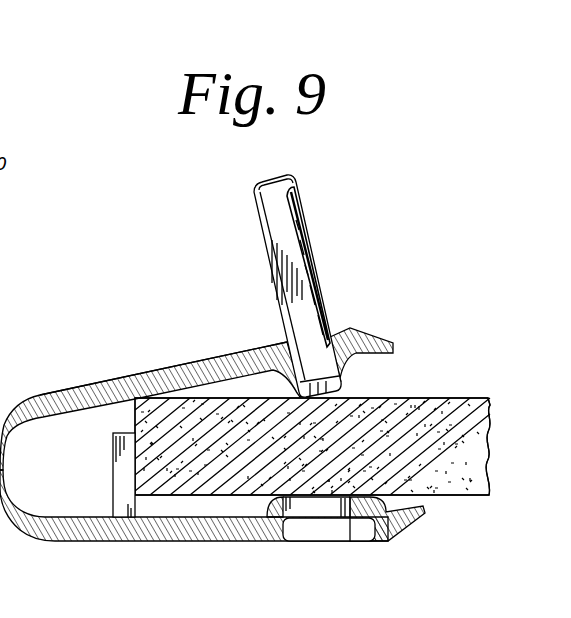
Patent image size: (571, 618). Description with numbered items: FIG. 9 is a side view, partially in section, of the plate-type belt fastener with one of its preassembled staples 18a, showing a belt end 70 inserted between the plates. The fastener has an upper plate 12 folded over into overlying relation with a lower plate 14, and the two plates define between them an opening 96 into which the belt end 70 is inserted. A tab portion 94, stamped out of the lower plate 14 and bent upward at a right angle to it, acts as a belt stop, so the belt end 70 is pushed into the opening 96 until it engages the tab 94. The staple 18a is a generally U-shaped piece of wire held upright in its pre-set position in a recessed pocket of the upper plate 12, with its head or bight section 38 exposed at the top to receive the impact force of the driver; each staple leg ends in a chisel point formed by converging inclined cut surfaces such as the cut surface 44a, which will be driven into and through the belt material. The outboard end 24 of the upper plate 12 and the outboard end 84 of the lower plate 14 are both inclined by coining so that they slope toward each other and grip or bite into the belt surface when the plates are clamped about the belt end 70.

The upper plate 12 is at (40, 400).
The lower plate 14 is at (58, 539).
The staple 18a is at (344, 258).
The outboard end of the upper plate 24 is at (377, 337).
The head or bight section 38 is at (265, 181).
The cut surface 44a is at (342, 391).
The belt end 70 is at (101, 387).
The outboard end of the lower plate 84 is at (392, 525).
The tab portion 94 is at (124, 479).
The opening 96 is at (378, 380).